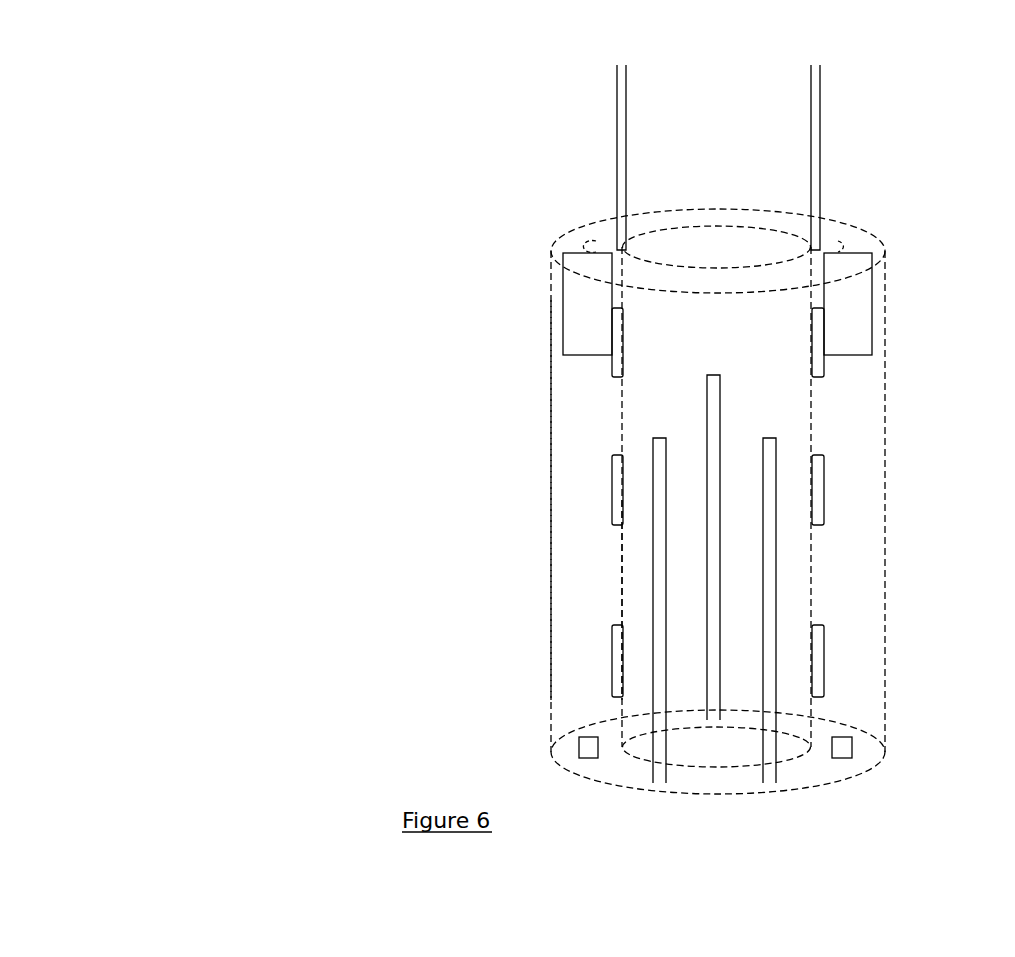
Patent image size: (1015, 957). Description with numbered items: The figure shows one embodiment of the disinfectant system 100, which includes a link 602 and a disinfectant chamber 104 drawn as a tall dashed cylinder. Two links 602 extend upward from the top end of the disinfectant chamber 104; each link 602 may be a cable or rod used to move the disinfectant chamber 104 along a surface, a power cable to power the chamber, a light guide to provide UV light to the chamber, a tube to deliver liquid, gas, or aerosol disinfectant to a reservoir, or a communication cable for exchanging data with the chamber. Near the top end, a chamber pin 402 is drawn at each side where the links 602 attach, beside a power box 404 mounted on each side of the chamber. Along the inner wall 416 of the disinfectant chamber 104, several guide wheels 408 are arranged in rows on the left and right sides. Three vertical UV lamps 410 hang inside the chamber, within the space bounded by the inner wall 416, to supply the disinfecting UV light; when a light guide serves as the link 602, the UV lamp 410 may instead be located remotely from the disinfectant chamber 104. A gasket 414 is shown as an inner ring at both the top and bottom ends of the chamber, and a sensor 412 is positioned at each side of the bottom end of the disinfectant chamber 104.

The disinfectant system 100 is at (190, 217).
The disinfectant chamber 104 is at (550, 282).
The chamber pin 402 is at (580, 240).
The power box 404 is at (578, 293).
The guide wheel 408 is at (608, 360).
The UV lamp 410 is at (714, 722).
The sensor 412 is at (577, 748).
The gasket 414 is at (676, 228).
The inner wall 416 is at (620, 572).
The link 602 is at (615, 145).